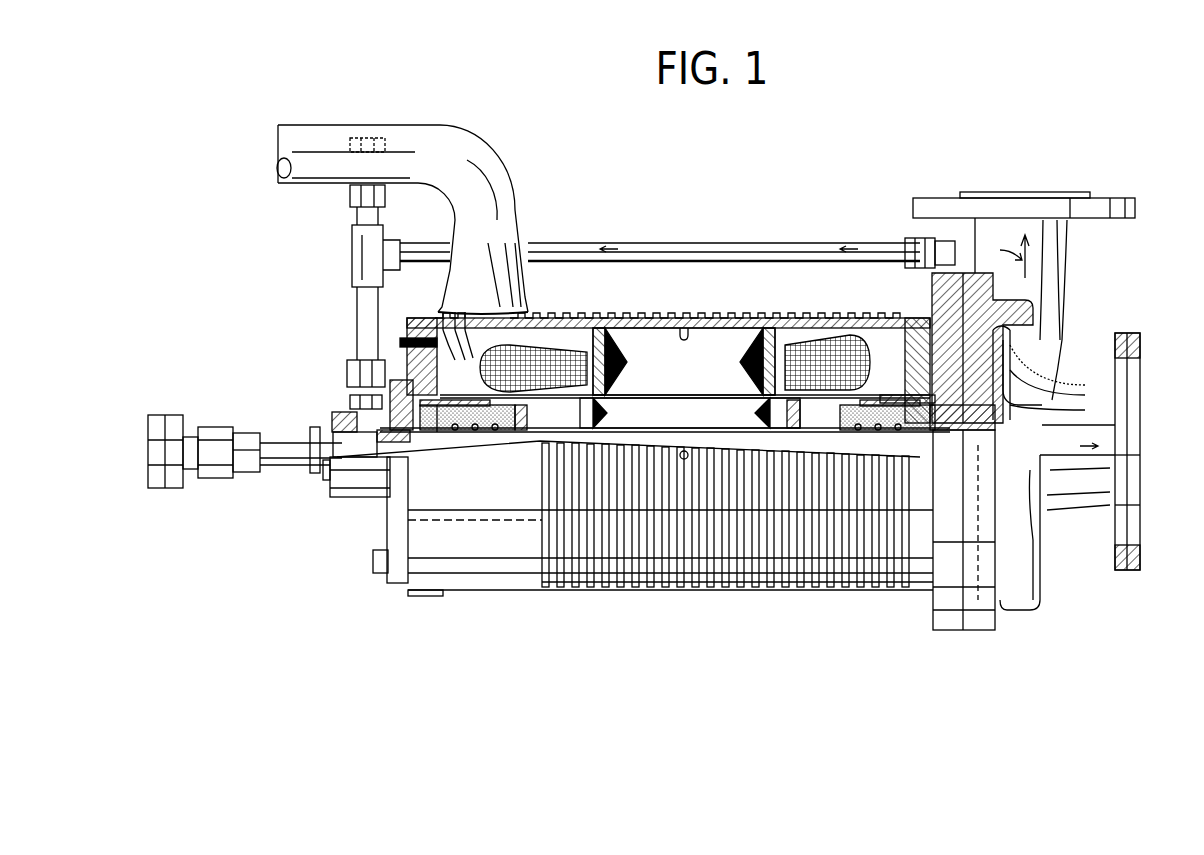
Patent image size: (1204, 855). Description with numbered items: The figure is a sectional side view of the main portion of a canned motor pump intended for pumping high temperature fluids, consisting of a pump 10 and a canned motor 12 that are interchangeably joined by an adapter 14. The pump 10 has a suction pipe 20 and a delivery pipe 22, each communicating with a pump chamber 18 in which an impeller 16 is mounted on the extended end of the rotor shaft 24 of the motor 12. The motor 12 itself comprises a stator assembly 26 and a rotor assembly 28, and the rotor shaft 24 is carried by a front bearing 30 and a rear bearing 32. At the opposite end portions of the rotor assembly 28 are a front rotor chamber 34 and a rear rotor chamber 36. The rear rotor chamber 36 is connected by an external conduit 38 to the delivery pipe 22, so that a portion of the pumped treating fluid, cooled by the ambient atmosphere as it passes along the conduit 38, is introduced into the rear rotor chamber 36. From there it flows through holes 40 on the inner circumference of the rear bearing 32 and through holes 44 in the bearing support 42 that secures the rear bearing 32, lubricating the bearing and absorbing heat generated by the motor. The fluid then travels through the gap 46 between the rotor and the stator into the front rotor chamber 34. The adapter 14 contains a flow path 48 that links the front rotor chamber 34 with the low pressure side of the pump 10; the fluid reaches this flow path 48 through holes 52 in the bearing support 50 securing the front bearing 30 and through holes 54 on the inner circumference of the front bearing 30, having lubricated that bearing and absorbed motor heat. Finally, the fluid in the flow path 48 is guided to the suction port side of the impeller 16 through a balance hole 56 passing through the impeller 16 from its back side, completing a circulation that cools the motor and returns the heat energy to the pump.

The pump 10 is at (1020, 330).
The canned motor 12 is at (498, 592).
The adapter 14 is at (945, 275).
The impeller 16 is at (1025, 370).
The pump chamber 18 is at (1035, 385).
The suction pipe 20 is at (1142, 390).
The delivery pipe 22 is at (1030, 205).
The rotor shaft 24 is at (938, 510).
The stator assembly 26 is at (632, 350).
The rotor assembly 28 is at (664, 410).
The front bearing 30 is at (832, 490).
The rear bearing 32 is at (500, 437).
The front rotor chamber 34 is at (802, 372).
The rear rotor chamber 36 is at (546, 335).
The external conduit 38 is at (762, 250).
The holes 40 is at (470, 432).
The bearing support 42 is at (460, 400).
The holes 44 is at (347, 380).
The gap 46 is at (720, 408).
The flow path 48 is at (916, 330).
The bearing support 50 is at (858, 380).
The holes 52 is at (884, 370).
The holes 54 is at (882, 435).
The balance hole 56 is at (1038, 432).